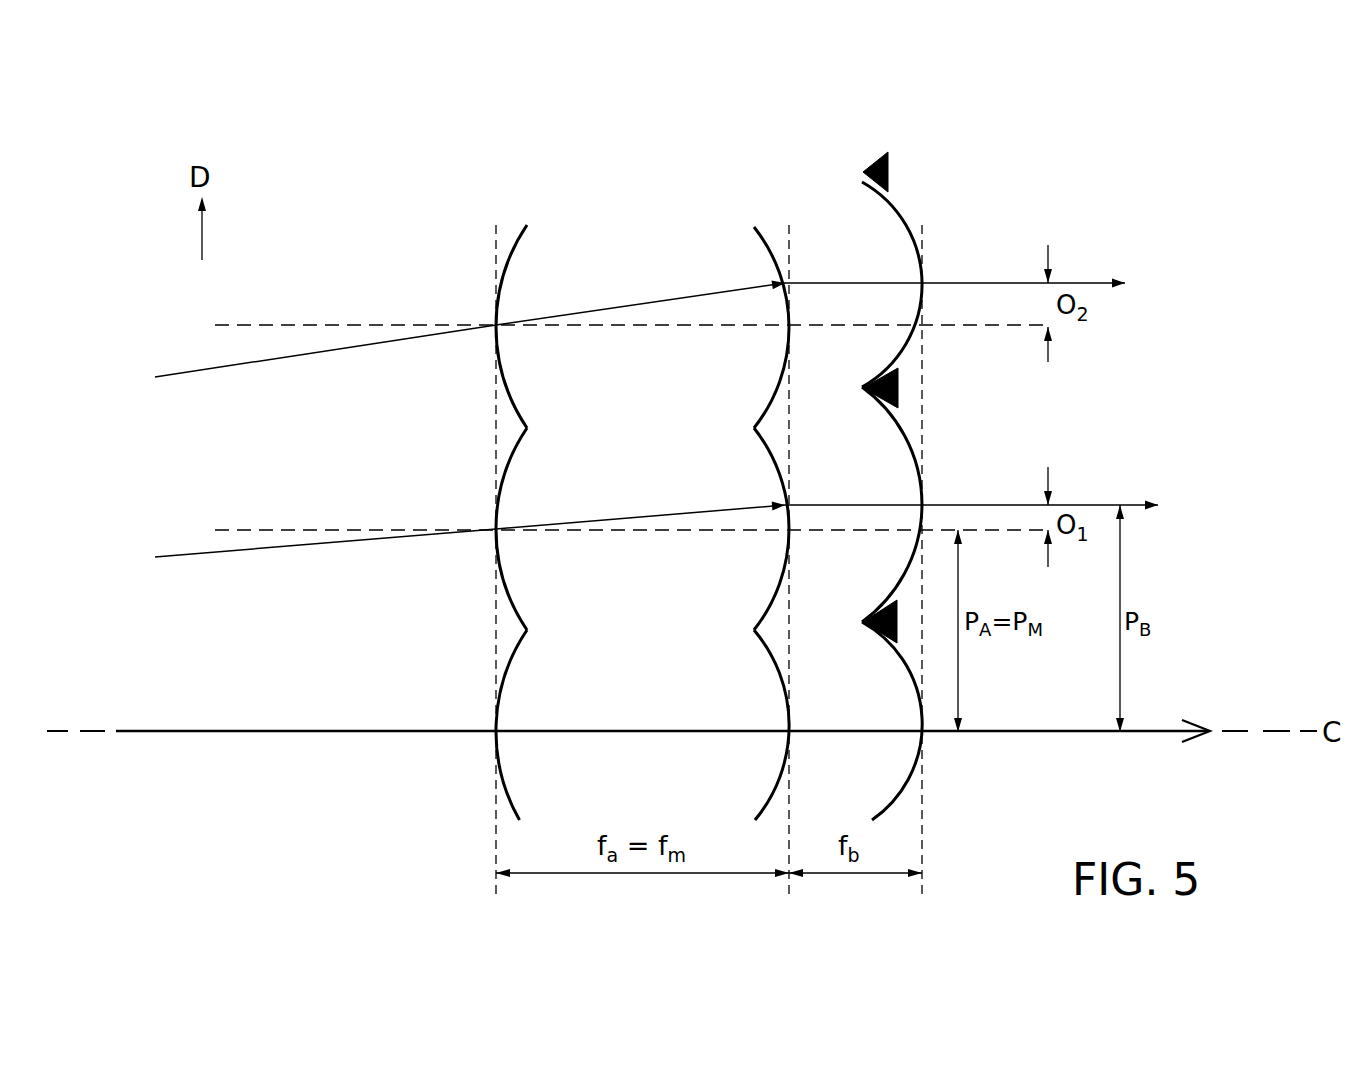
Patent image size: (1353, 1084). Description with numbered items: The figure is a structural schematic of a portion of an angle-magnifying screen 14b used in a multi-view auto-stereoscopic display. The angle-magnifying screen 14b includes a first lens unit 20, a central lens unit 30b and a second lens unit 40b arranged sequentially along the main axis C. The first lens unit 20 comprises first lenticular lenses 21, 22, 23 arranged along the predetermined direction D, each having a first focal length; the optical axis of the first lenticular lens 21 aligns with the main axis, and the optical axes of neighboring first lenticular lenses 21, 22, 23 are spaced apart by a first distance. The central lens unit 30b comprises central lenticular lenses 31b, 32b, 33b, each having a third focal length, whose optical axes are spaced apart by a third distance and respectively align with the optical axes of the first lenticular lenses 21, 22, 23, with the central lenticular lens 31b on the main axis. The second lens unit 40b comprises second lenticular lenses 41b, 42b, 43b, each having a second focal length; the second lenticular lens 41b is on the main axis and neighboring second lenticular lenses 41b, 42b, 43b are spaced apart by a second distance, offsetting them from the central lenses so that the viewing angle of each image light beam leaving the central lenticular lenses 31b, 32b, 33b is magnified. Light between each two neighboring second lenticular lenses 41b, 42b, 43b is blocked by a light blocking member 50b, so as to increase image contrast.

The angle-magnifying screen 14b is at (437, 137).
The first lens unit 20 is at (522, 183).
The first lenticular lens 21 is at (508, 798).
The first lenticular lens 22 is at (506, 602).
The first lenticular lens 23 is at (508, 262).
The central lens unit 30b is at (765, 168).
The central lenticular lens 31b is at (776, 670).
The central lenticular lens 32b is at (772, 466).
The central lenticular lens 33b is at (775, 264).
The second lens unit 40b is at (858, 150).
The second lenticular lens 41b is at (906, 668).
The second lenticular lens 42b is at (913, 465).
The second lenticular lens 43b is at (920, 264).
The light blocking member 50b is at (891, 172).